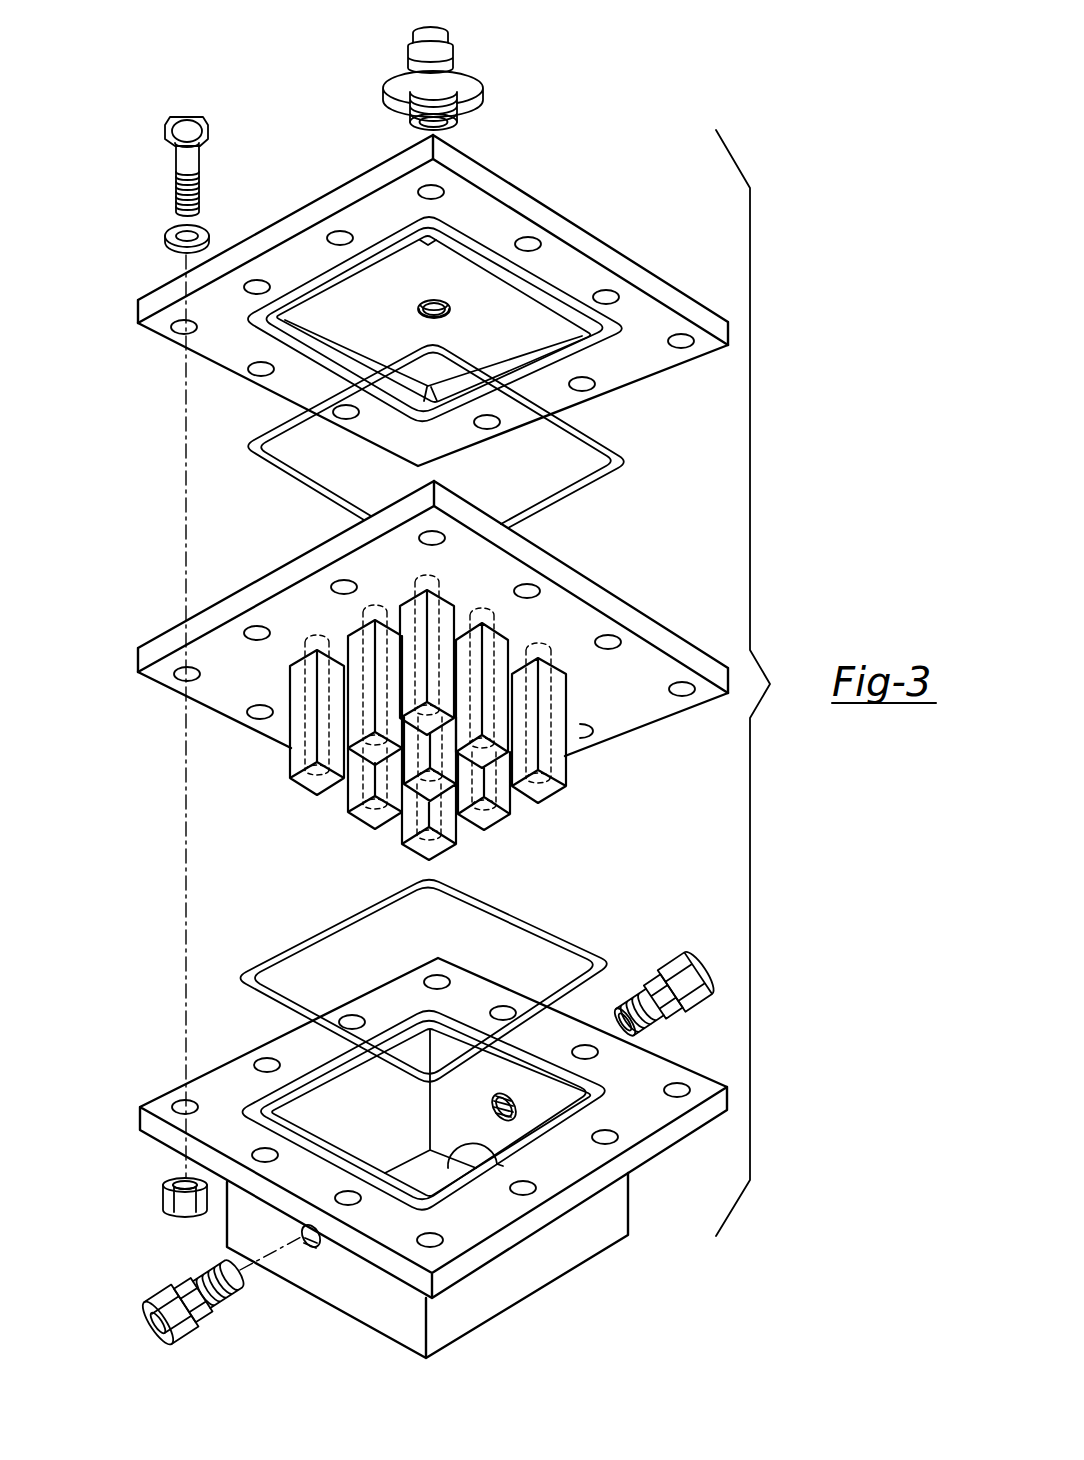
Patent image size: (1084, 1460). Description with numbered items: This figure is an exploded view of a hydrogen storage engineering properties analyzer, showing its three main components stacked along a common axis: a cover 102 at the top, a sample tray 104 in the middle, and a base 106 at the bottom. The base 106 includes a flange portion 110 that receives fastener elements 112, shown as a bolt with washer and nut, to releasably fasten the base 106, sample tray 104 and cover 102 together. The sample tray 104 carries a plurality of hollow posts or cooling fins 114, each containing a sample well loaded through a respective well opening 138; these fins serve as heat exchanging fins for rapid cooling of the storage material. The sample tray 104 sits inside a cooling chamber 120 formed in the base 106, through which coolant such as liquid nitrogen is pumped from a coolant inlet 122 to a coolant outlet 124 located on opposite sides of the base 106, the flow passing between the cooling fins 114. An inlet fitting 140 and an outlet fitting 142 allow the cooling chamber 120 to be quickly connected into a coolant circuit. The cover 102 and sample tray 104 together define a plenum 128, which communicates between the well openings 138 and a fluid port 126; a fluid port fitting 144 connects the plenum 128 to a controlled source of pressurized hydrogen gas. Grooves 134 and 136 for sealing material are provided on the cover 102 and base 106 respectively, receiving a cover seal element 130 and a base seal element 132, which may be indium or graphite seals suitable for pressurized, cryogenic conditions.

The cover 102 is at (433, 300).
The sample tray 104 is at (433, 670).
The base 106 is at (577, 1245).
The flange portion 110 is at (411, 1158).
The fastener elements 112 is at (190, 157).
The cooling fins 114 is at (372, 815).
The cooling chamber 120 is at (340, 1112).
The coolant inlet 122 is at (305, 1240).
The coolant outlet 124 is at (493, 1107).
The fluid port 126 is at (418, 317).
The plenum 128 is at (507, 338).
The cover seal element 130 is at (586, 432).
The base seal element 132 is at (517, 913).
The groove 134 is at (308, 355).
The groove 136 is at (466, 1148).
The well openings 138 is at (315, 636).
The inlet fitting 140 is at (187, 1335).
The outlet fitting 142 is at (656, 978).
The fluid port fitting 144 is at (456, 50).